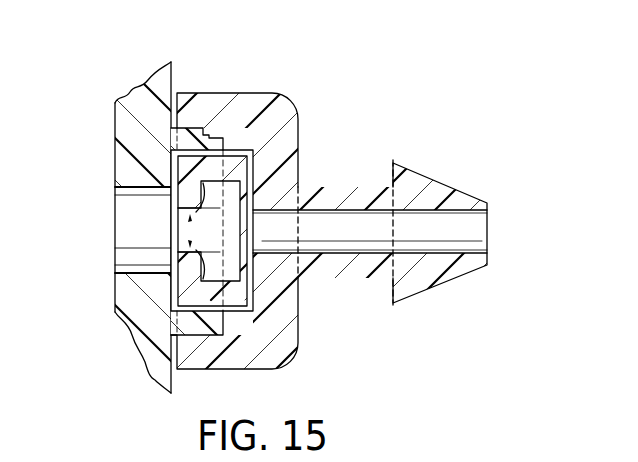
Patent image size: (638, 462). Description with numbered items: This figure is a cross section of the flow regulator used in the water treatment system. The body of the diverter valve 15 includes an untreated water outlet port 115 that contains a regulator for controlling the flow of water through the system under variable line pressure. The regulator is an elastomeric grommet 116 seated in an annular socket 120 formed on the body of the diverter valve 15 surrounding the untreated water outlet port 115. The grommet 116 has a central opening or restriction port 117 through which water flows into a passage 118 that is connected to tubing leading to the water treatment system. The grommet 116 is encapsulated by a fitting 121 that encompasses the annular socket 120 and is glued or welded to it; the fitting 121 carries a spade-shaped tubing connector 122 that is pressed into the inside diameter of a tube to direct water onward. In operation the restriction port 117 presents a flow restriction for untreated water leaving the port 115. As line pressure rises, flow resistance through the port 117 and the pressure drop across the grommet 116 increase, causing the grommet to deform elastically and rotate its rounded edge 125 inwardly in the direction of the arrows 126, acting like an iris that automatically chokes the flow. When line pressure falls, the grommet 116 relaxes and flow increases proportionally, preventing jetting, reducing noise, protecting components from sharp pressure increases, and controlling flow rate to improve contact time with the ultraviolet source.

The diverter valve 15 is at (115, 312).
The untreated water outlet port 115 is at (133, 230).
The elastomeric grommet 116 is at (252, 160).
The restriction port 117 is at (225, 215).
The passage 118 is at (475, 232).
The annular socket 120 is at (207, 128).
The fitting 121 is at (287, 100).
The spade-shaped tubing connector 122 is at (445, 185).
The rounded edge 125 is at (187, 199).
The arrows 126 is at (190, 224).